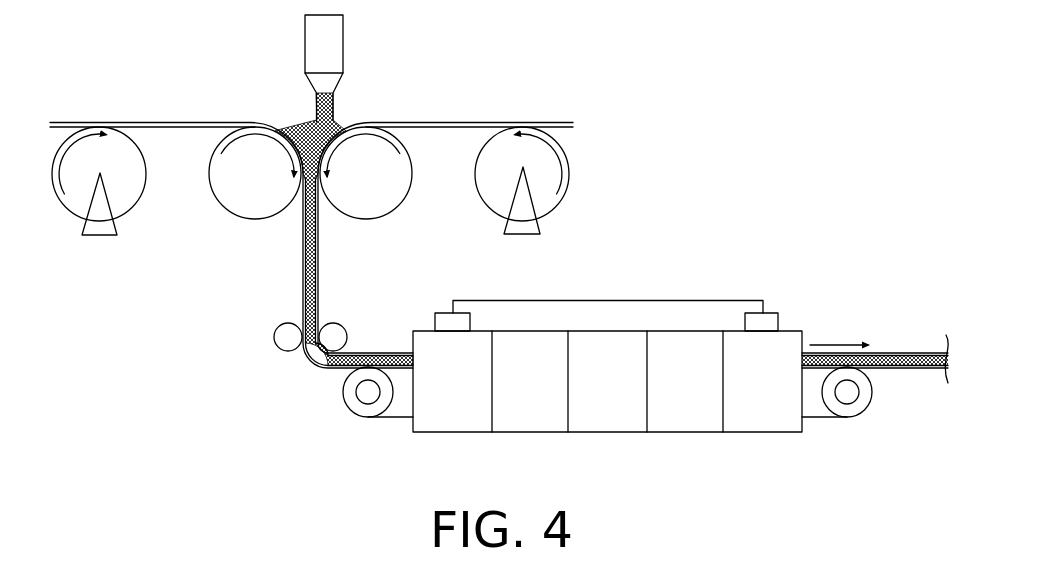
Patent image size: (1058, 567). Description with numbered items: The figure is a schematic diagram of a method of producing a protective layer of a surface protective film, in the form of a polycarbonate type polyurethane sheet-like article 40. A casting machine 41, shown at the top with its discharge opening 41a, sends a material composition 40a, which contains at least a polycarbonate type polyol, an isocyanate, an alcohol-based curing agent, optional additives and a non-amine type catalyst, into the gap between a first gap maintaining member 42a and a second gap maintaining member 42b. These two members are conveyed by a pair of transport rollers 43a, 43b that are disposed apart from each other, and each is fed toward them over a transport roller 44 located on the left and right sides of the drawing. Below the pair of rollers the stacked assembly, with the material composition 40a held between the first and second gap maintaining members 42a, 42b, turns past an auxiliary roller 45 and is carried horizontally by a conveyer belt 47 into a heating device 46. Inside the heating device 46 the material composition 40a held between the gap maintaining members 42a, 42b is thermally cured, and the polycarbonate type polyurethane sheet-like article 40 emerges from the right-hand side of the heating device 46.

The polycarbonate type polyurethane sheet-like article 40 is at (913, 362).
The material composition 40a is at (315, 110).
The casting machine 41 is at (333, 43).
The nozzle 41a is at (333, 82).
The first gap maintaining member 42a is at (186, 122).
The second gap maintaining member 42b is at (442, 122).
The transport roller 43a is at (247, 210).
The transport roller 43b is at (380, 200).
The transport roller 44 is at (130, 197).
The auxiliary roller 45 is at (283, 337).
The heating device 46 is at (683, 423).
The conveyer belt 47 is at (362, 413).